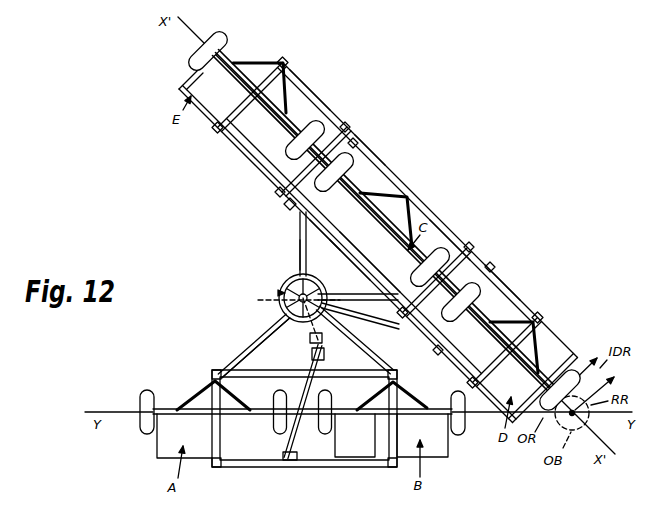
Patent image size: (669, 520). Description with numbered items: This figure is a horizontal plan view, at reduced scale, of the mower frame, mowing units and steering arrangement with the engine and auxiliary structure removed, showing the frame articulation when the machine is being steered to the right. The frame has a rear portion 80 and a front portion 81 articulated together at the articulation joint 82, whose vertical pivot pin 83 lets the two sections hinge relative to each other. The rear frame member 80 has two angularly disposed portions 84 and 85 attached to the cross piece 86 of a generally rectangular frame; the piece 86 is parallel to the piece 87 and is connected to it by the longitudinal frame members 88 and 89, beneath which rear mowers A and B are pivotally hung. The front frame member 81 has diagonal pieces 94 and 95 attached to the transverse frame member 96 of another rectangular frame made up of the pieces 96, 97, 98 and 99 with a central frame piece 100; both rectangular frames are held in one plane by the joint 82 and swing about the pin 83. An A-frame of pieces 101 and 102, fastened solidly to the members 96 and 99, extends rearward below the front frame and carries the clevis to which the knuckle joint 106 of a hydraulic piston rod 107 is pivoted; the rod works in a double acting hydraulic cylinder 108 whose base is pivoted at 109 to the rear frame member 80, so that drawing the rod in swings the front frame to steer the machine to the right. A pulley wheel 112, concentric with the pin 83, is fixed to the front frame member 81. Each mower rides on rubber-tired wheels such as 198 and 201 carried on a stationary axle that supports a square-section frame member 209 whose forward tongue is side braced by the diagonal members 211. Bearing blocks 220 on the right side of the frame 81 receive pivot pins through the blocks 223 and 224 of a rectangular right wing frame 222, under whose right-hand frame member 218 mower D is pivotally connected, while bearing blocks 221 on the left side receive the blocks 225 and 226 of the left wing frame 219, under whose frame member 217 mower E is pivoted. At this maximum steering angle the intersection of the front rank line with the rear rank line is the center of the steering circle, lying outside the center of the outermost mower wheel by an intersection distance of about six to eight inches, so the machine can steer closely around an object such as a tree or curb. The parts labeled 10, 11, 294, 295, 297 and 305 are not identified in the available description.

The wheel 10 is at (148, 391).
The roller 11 is at (271, 423).
The rear frame member 80 is at (262, 331).
The front main frame member 81 is at (298, 258).
The articulation joint 82 is at (288, 299).
The vertical pivot pin 83 is at (288, 282).
The angularly disposed portion 84 is at (256, 344).
The angularly disposed portion 85 is at (364, 346).
The cross piece 86 is at (230, 370).
The frame piece 87 is at (250, 468).
The longitudinal frame member 88 is at (219, 444).
The longitudinal frame member 89 is at (398, 432).
The diagonal piece 94 is at (300, 242).
The diagonal piece 95 is at (356, 301).
The transverse frame member 96 is at (323, 234).
The frame piece 97 is at (286, 204).
The frame piece 98 is at (407, 178).
The frame piece 99 is at (378, 254).
The central frame piece 100 is at (367, 239).
The A-frame piece 101 is at (338, 277).
The A-frame piece 102 is at (378, 326).
The knuckle joint 106 is at (311, 338).
The hydraulic piston rod 107 is at (312, 353).
The double acting hydraulic cylinder 108 is at (296, 440).
The cylinder pivot 109 is at (290, 467).
The pulley wheel 112 is at (278, 293).
The wheel 198 is at (461, 438).
The wheel 201 is at (329, 431).
The frame member of square section 209 is at (197, 421).
The diagonal members 211 is at (197, 399).
The frame member 217 is at (230, 113).
The right-hand frame member 218 is at (539, 347).
The wing frame 219 is at (223, 144).
The bearing blocks 220 is at (476, 249).
The bearing blocks 221 is at (346, 123).
The wing frame 222 is at (437, 356).
The bearing block 223 is at (441, 327).
The bearing block 224 is at (491, 268).
The bearing block 225 is at (279, 191).
The bearing block 226 is at (356, 140).
The guide rail 294 is at (367, 143).
The guide rail 295 is at (448, 243).
The guide rail 297 is at (321, 106).
The rail segment 305 is at (501, 278).